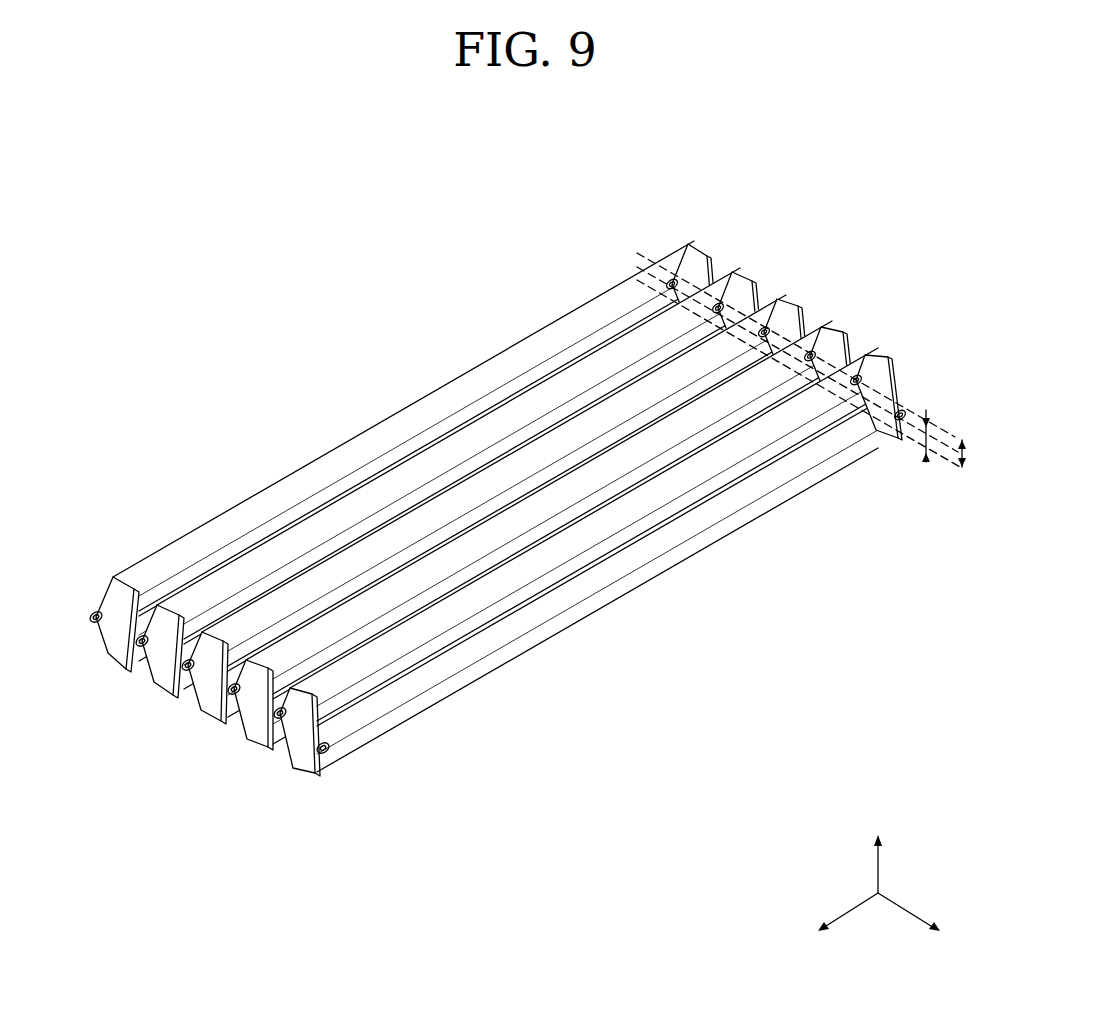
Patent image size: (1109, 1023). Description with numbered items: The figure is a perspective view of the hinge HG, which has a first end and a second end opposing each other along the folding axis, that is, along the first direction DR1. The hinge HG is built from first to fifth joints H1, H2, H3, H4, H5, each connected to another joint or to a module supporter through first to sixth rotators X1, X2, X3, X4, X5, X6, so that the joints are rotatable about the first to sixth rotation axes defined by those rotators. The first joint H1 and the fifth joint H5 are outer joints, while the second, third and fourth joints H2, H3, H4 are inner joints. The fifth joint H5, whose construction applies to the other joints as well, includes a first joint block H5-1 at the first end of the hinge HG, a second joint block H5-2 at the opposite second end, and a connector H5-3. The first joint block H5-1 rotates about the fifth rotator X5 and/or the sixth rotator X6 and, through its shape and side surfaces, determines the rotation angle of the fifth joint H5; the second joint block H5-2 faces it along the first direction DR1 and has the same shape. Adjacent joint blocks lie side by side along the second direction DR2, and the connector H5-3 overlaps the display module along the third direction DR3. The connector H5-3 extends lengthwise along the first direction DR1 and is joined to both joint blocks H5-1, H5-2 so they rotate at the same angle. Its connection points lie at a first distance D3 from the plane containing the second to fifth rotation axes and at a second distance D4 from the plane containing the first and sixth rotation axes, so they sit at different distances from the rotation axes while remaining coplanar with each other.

The hinge HG is at (857, 241).
The first joint H1 is at (118, 657).
The second joint H2 is at (163, 680).
The third joint H3 is at (208, 710).
The fourth joint H4 is at (256, 738).
The fifth joint H5 is at (598, 623).
The first joint block H5-1 is at (350, 784).
The second joint block H5-2 is at (878, 413).
The connector H5-3 is at (523, 630).
The first rotator X1 is at (95, 612).
The second rotator X2 is at (140, 636).
The third rotator X3 is at (186, 660).
The fourth rotator X4 is at (232, 684).
The fifth rotator X5 is at (278, 708).
The sixth rotator X6 is at (321, 743).
The first distance D3 is at (964, 447).
The second distance D4 is at (940, 450).
The first direction DR1 is at (824, 921).
The second direction DR2 is at (932, 921).
The third direction DR3 is at (878, 846).